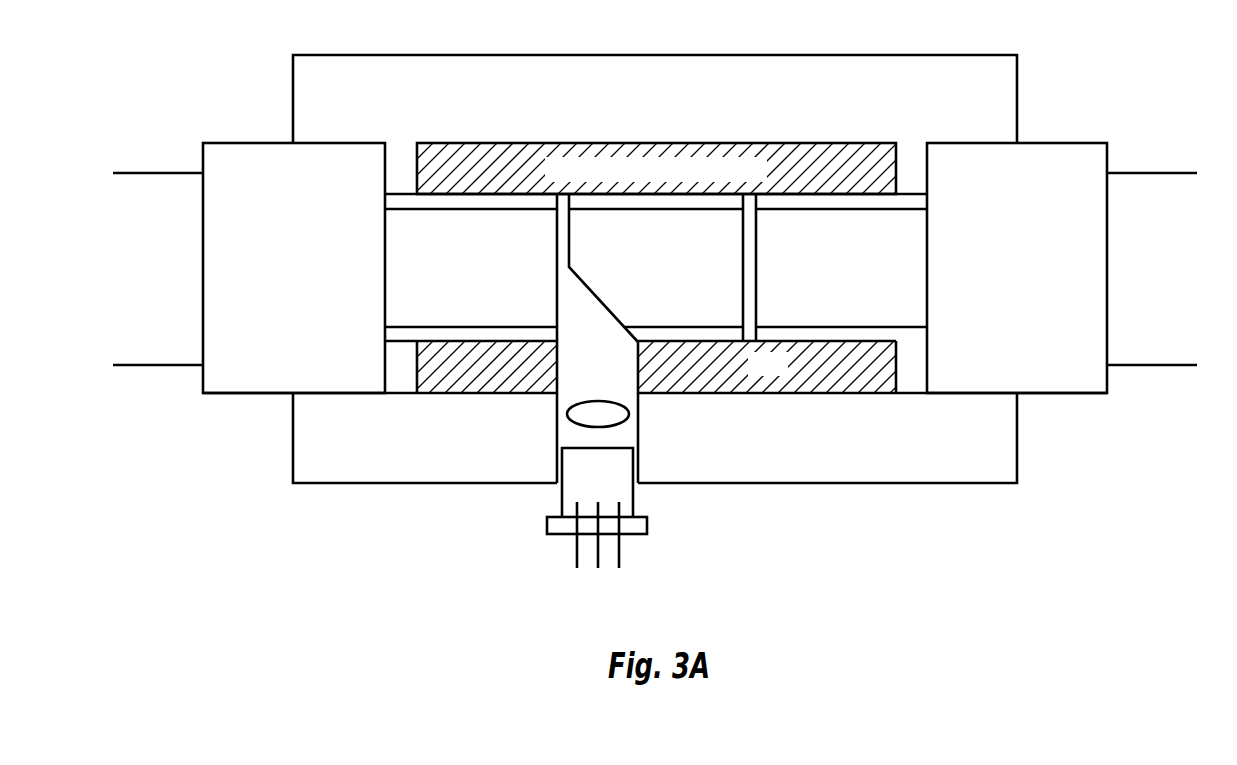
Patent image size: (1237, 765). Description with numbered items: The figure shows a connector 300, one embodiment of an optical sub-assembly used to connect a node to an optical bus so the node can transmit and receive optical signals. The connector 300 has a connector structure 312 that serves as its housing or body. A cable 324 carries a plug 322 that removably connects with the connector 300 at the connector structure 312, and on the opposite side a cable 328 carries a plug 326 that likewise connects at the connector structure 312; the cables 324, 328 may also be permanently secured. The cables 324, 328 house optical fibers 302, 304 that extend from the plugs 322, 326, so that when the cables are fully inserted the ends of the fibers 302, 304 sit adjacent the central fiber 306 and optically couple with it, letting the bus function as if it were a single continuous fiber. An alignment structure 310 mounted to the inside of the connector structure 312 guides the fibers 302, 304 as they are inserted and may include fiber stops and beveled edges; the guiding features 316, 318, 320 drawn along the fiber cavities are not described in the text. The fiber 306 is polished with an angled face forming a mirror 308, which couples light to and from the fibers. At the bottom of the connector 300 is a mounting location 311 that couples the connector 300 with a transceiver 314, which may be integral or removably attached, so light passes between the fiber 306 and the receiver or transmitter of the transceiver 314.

The connector 300 is at (1098, 570).
The optical fiber 302 is at (487, 279).
The optical fiber 304 is at (842, 277).
The fiber 306 is at (674, 280).
The mirror 308 is at (600, 295).
The alignment structure 310 is at (785, 376).
The mounting location 311 is at (662, 505).
The connector structure 312 is at (847, 449).
The transceiver 314 is at (632, 535).
The guide rail 316 is at (485, 200).
The guide rail 318 is at (678, 201).
The guide rail 320 is at (830, 201).
The plug 322 is at (310, 297).
The cable 324 is at (169, 297).
The plug 326 is at (1015, 297).
The cable 328 is at (1169, 297).